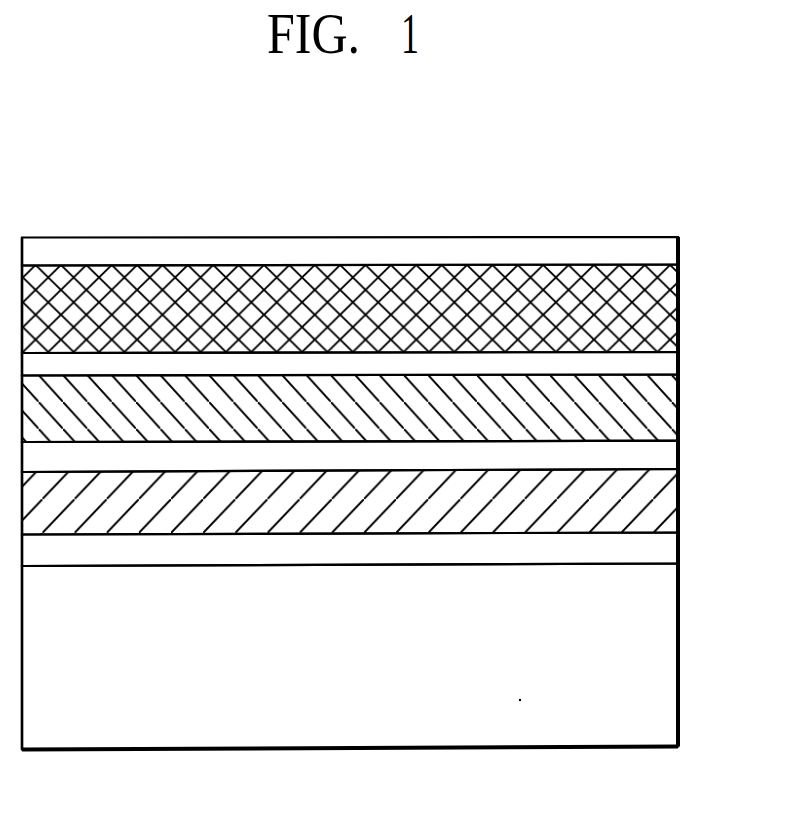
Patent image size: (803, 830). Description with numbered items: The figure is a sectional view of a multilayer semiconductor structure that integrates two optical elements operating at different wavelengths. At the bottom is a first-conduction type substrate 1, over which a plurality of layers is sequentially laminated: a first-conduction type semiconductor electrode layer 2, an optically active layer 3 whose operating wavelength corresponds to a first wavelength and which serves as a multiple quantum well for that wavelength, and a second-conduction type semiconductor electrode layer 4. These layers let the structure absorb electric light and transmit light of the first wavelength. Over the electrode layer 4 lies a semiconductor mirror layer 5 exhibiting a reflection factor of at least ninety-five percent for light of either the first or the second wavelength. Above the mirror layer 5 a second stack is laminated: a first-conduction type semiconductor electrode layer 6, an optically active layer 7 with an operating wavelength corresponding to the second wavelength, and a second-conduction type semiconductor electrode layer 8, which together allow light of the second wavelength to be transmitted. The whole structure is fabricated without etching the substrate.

The first-conduction type substrate 1 is at (663, 627).
The first-conduction type semiconductor electrode layer 2 is at (665, 546).
The optically active layer 3 is at (665, 496).
The second-conduction type semiconductor electrode layer 4 is at (665, 452).
The semiconductor mirror layer 5 is at (665, 401).
The first-conduction type semiconductor electrode layer 6 is at (665, 357).
The optically active layer 7 is at (665, 297).
The second-conduction type semiconductor electrode layer 8 is at (665, 251).